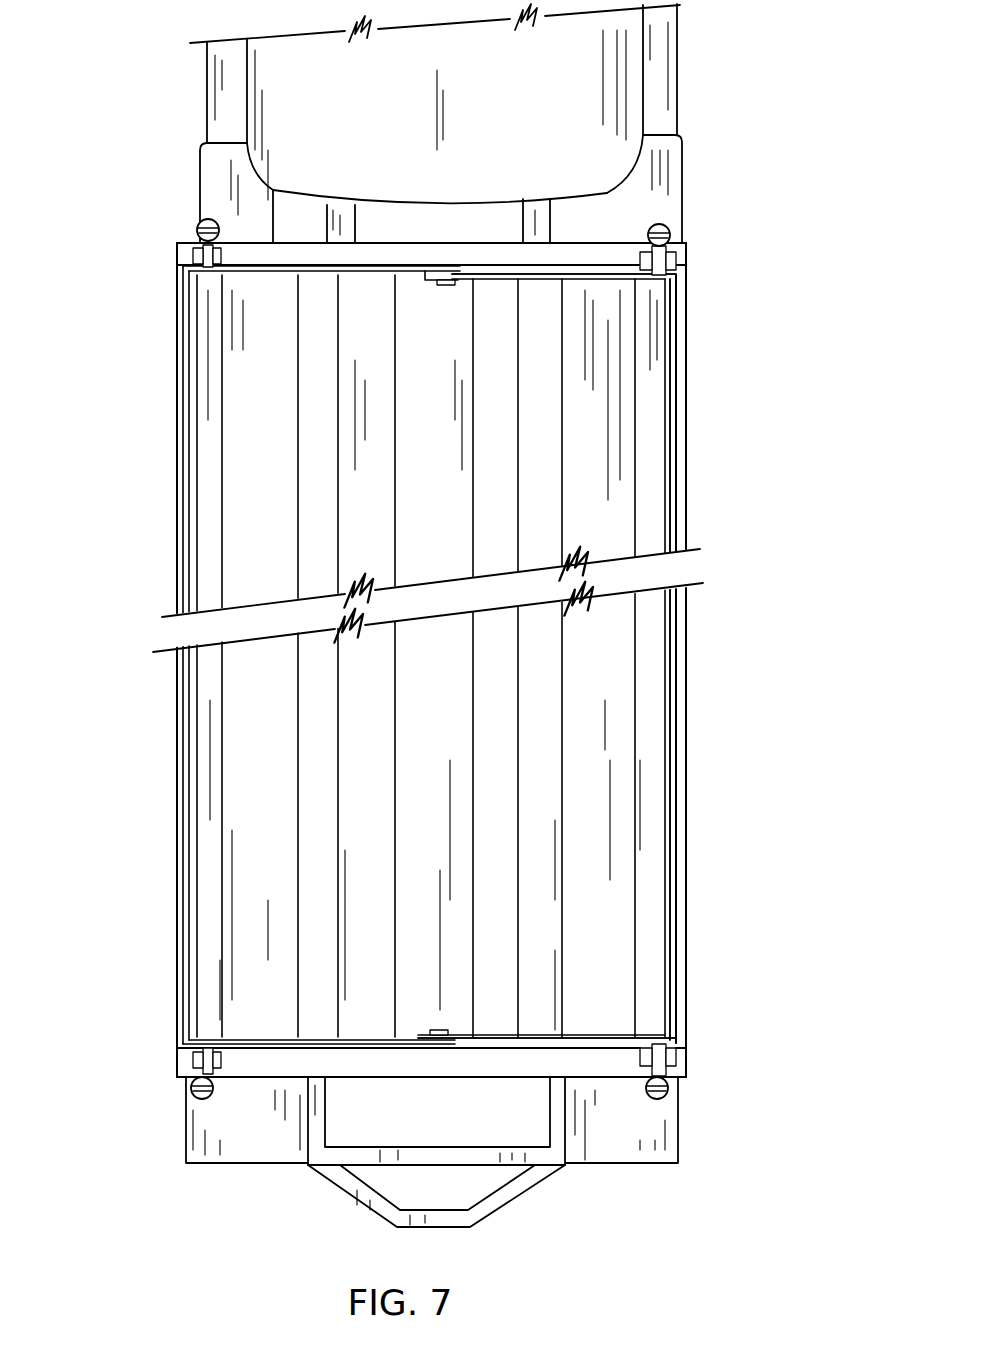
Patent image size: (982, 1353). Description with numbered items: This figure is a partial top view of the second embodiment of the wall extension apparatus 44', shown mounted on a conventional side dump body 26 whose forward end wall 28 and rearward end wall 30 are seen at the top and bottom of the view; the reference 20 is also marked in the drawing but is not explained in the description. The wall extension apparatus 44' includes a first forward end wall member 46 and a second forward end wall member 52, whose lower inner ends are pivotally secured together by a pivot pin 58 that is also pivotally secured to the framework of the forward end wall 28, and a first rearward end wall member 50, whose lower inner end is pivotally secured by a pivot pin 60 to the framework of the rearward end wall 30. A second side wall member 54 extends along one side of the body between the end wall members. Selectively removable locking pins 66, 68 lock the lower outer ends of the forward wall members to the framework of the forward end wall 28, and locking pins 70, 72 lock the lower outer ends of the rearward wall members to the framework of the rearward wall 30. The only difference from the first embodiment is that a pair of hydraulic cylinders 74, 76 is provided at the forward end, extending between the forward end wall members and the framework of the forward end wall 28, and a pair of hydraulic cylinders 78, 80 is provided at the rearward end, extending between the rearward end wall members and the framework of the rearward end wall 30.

The panel assembly 20 is at (718, 873).
The side dump body 26 is at (594, 506).
The forward end wall 28 is at (605, 258).
The rearward end wall 30 is at (598, 1063).
The wall extension apparatus 44' is at (501, 660).
The first forward end wall member 46 is at (290, 276).
The first rearward end wall member 50 is at (268, 1047).
The second forward end wall member 52 is at (585, 282).
The second side wall member 54 is at (688, 806).
The pivot pin 58 is at (445, 287).
The pivot pin 60 is at (440, 1029).
The locking pin 66 is at (190, 253).
The locking pin 68 is at (676, 265).
The locking pin 70 is at (192, 1060).
The locking pin 72 is at (673, 1055).
The hydraulic cylinder 74 is at (200, 226).
The hydraulic cylinder 76 is at (662, 223).
The hydraulic cylinder 78 is at (198, 1098).
The hydraulic cylinder 80 is at (662, 1098).